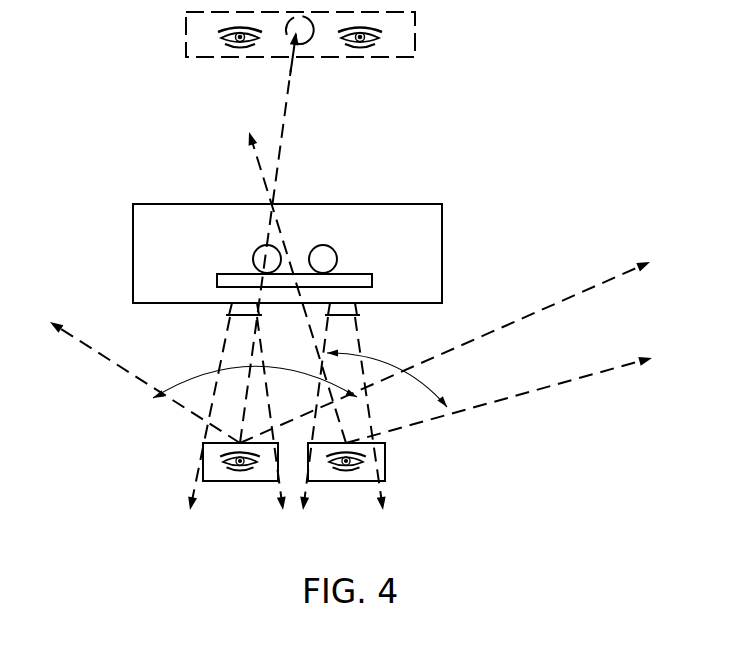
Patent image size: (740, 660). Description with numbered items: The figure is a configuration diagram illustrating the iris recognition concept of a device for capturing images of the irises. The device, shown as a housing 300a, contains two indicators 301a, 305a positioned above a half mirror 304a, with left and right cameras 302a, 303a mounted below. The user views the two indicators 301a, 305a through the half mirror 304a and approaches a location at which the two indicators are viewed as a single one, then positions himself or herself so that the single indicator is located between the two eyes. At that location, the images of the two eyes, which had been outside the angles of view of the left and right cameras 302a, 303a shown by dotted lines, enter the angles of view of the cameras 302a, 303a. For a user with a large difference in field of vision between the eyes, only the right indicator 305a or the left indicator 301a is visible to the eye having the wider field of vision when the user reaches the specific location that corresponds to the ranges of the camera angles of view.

The gaze tracking device housing 300a is at (334, 204).
The indicator 301a is at (346, 257).
The left camera 302a is at (220, 322).
The right camera 303a is at (365, 320).
The half mirror 304a is at (382, 288).
The indicator 305a is at (244, 257).